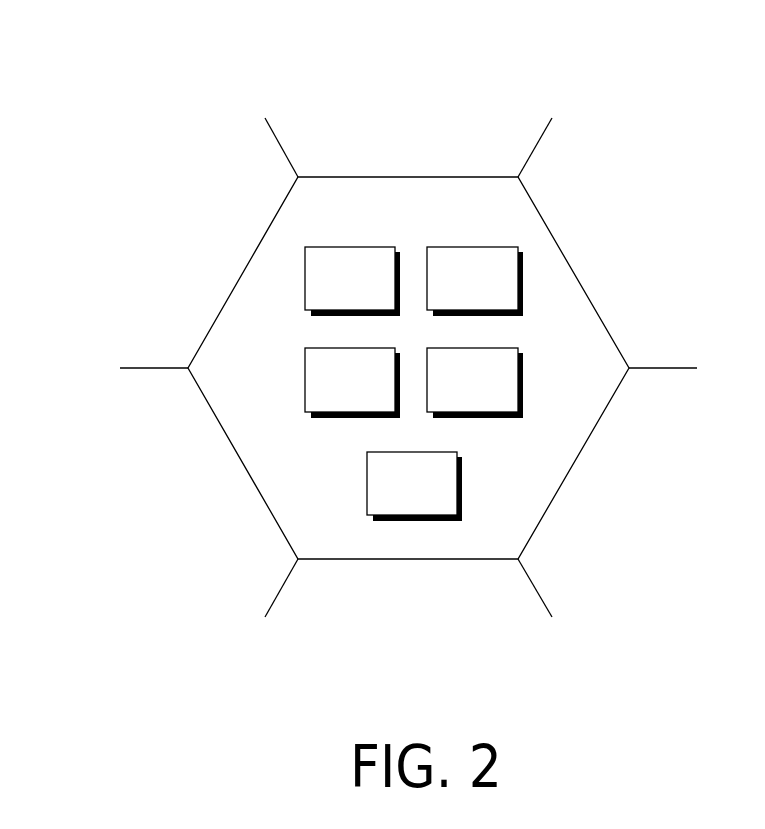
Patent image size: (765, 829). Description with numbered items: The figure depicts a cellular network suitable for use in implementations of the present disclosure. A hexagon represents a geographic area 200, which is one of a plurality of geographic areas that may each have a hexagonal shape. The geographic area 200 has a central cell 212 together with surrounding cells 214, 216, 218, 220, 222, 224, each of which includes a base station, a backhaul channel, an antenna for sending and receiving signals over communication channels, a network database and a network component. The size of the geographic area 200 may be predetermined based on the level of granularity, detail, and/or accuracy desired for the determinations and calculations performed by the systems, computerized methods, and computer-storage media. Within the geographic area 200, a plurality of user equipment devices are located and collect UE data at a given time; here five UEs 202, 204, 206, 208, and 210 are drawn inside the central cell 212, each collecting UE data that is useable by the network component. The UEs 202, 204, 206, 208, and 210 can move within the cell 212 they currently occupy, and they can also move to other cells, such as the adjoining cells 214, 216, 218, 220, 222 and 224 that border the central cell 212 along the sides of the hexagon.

The geographic area 200 is at (100, 83).
The UE 202 is at (350, 247).
The UE 204 is at (467, 247).
The UE 206 is at (350, 413).
The UE 208 is at (472, 413).
The UE 210 is at (367, 485).
The cell 212 is at (428, 213).
The adjoining cell 214 is at (373, 151).
The adjoining cell 216 is at (642, 277).
The adjoining cell 218 is at (647, 506).
The adjoining cell 220 is at (404, 616).
The adjoining cell 222 is at (169, 501).
The adjoining cell 224 is at (171, 277).